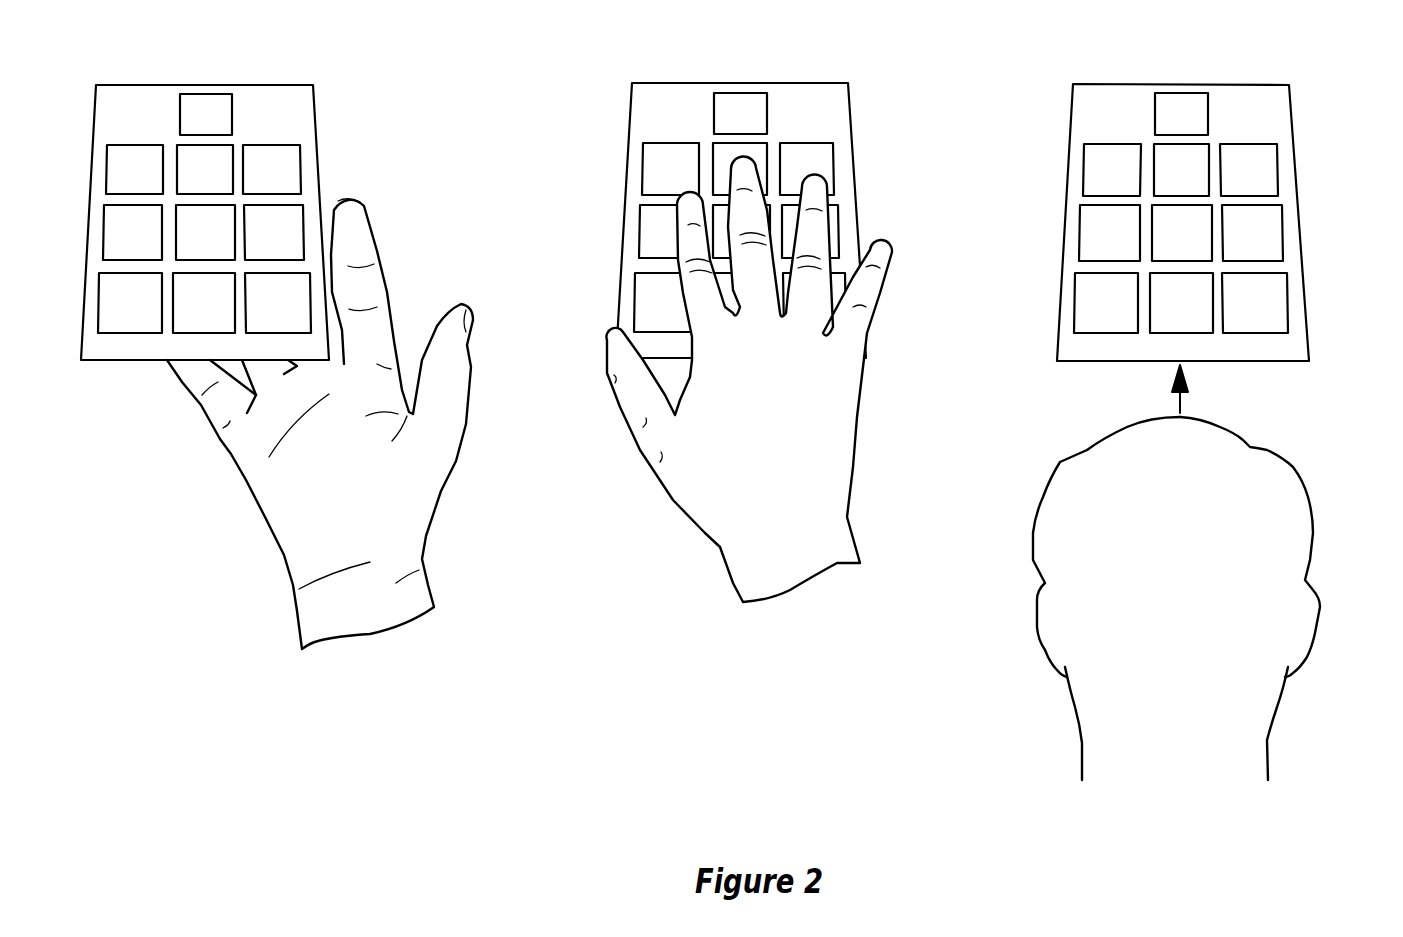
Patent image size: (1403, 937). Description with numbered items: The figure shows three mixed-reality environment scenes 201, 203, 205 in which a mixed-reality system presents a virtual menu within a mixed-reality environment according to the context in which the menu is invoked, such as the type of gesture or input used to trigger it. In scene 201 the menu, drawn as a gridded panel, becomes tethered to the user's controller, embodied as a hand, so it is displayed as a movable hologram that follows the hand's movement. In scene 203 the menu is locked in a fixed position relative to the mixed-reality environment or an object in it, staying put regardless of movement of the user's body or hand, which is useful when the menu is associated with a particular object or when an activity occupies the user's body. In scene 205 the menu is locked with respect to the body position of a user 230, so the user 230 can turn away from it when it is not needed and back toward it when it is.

The mixed-reality environment scene 201 is at (121, 494).
The mixed-reality environment scene 203 is at (599, 492).
The mixed-reality environment scene 205 is at (995, 78).
The user 230 is at (1308, 497).